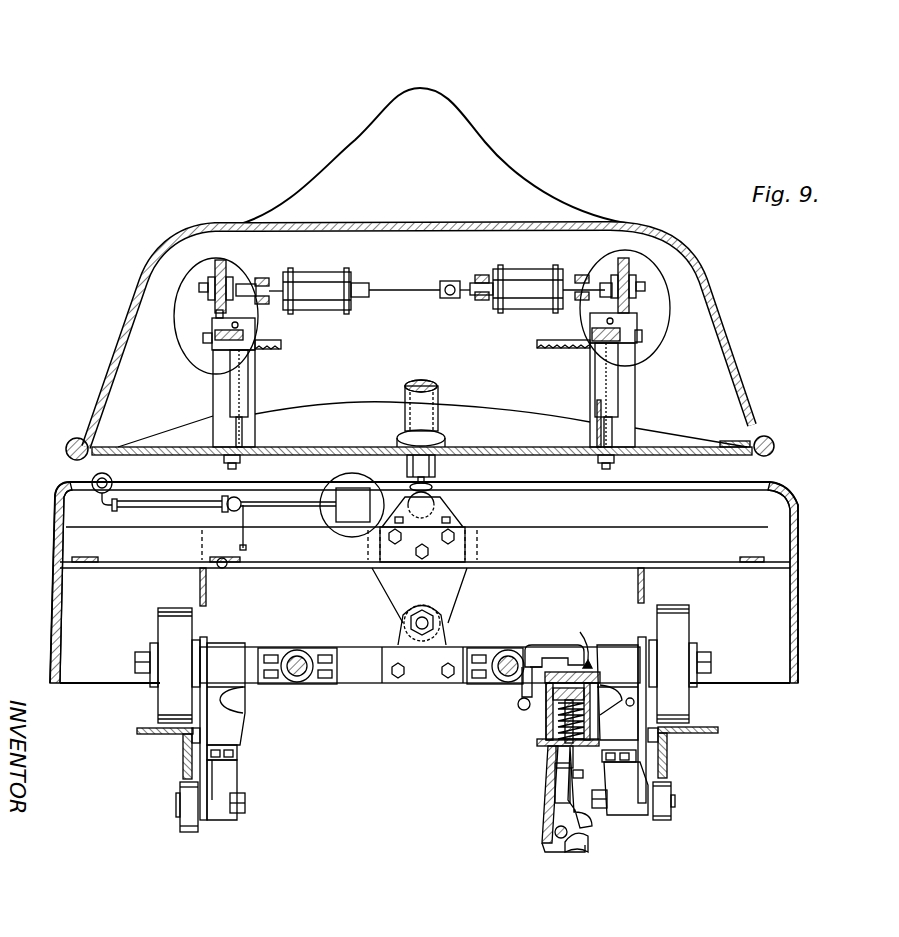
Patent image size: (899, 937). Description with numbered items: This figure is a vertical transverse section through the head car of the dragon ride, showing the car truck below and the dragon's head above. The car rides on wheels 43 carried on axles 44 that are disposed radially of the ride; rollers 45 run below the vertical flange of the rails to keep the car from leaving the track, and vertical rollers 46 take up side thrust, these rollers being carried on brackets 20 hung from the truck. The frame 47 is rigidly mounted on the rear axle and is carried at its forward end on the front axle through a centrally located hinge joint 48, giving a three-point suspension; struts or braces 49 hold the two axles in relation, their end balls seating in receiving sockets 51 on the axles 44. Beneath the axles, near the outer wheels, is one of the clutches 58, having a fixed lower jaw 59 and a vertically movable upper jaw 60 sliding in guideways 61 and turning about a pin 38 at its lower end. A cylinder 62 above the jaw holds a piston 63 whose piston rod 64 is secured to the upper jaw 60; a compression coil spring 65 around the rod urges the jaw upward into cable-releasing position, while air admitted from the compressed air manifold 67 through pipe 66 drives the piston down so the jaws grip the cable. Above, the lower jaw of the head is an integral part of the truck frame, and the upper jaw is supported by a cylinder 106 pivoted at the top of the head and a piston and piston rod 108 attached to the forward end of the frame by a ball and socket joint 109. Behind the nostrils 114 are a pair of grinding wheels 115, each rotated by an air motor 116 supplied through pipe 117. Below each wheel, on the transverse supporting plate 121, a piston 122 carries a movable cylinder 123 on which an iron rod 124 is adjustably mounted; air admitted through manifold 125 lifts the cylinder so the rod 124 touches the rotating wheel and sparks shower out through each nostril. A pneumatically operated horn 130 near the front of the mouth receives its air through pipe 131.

The bracket arm 20 is at (148, 735).
The pivot pin 38 is at (552, 832).
The wheels 43 is at (170, 612).
The axles 44 is at (367, 684).
The rollers 45 is at (185, 830).
The vertical rollers 46 is at (185, 758).
The frame 47 is at (795, 540).
The hinge joint 48 is at (445, 636).
The struts or braces 49 is at (297, 678).
The receiving sockets 51 is at (312, 655).
The clutches 58 is at (606, 668).
The fixed lower jaw 59 is at (592, 842).
The upper jaw 60 is at (557, 812).
The guideways 61 is at (554, 790).
The cylinder 62 is at (548, 722).
The piston 63 is at (546, 700).
The piston rod 64 is at (566, 752).
The compression coil spring 65 is at (552, 736).
The pipe 66 is at (556, 655).
The compressed air manifold 67 is at (517, 704).
The cylinder 106 is at (440, 398).
The piston and piston rod 108 is at (438, 382).
The ball and socket joint 109 is at (437, 502).
The nostrils 114 is at (190, 291).
The grinding wheels 115 is at (218, 262).
The air motor 116 is at (512, 272).
The pipe 117 is at (450, 281).
The transverse supporting plate 121 is at (522, 440).
The piston 122 is at (610, 432).
The movable cylinder 123 is at (236, 393).
The rod 124 is at (212, 322).
The manifold 125 is at (578, 349).
The pneumatically operated horn 130 is at (340, 490).
The pipe 131 is at (112, 482).